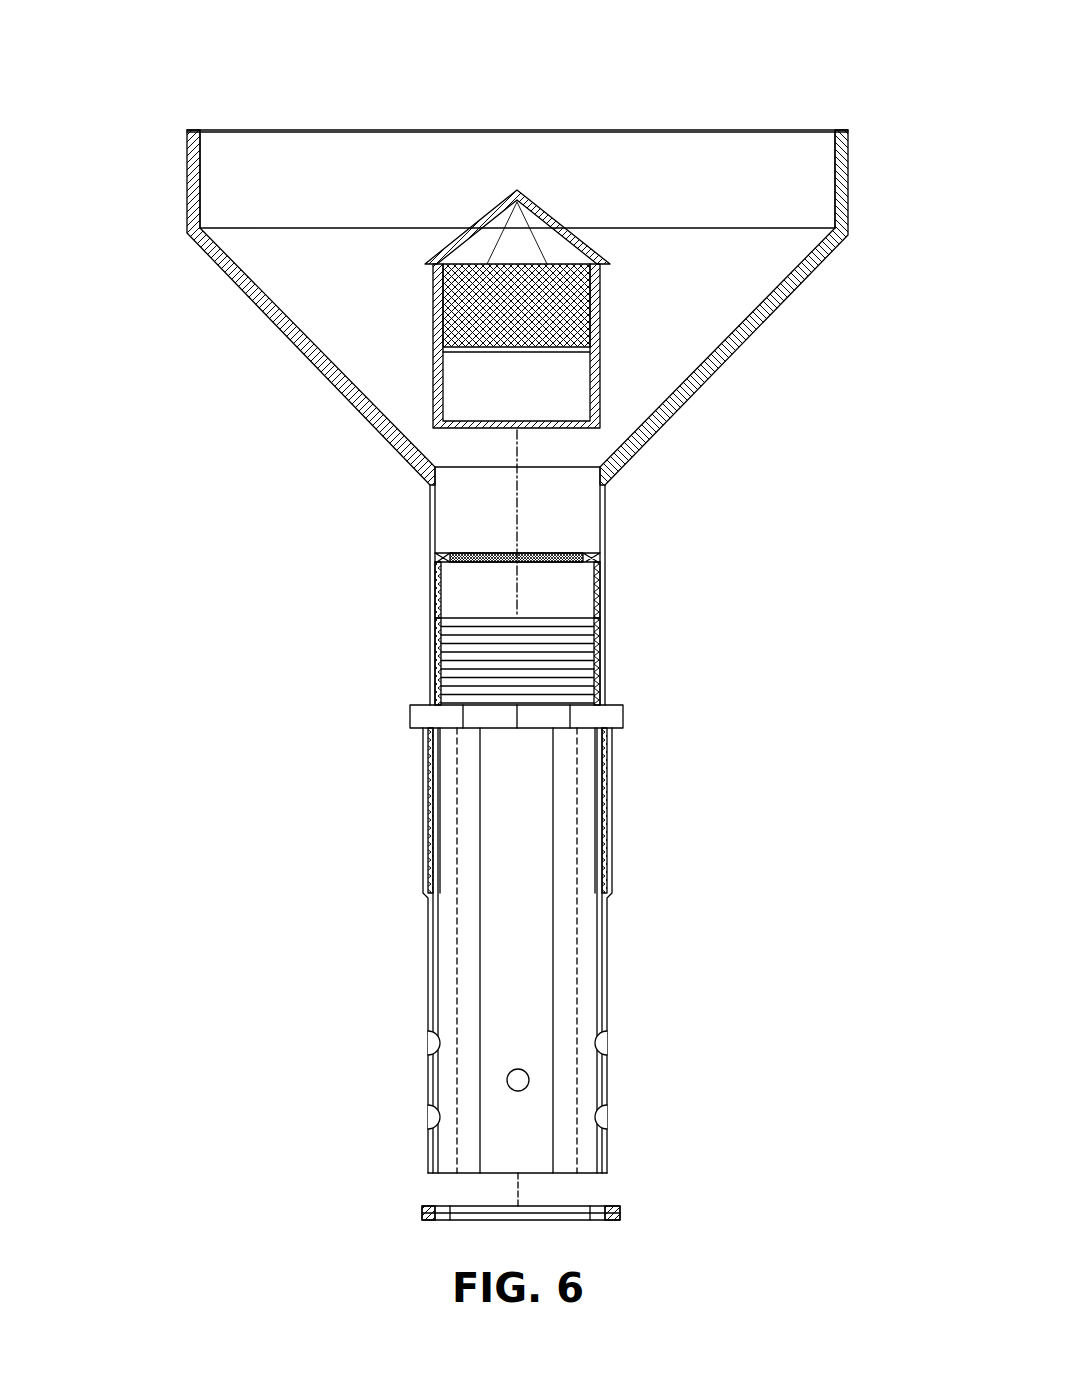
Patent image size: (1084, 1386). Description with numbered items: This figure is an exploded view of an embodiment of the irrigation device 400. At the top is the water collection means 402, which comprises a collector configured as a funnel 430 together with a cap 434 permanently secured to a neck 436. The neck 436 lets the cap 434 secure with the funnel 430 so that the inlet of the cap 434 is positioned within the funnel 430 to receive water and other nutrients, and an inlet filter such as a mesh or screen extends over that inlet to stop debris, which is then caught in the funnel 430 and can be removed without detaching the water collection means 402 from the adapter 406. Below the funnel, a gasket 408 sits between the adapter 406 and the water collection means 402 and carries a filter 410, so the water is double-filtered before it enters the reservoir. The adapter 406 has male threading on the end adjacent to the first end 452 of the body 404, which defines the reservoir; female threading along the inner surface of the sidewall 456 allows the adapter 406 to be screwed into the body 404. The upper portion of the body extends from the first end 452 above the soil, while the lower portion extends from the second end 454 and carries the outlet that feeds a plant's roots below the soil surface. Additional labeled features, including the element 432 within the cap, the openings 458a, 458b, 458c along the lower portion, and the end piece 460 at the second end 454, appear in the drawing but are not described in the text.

The irrigation device 400 is at (127, 86).
The water collection means 402 is at (165, 308).
The dispensing body 404 is at (378, 976).
The adapter 406 is at (428, 715).
The gasket 408 is at (444, 557).
The filter 410 is at (548, 553).
The funnel 430 is at (280, 210).
The filter medium 432 is at (580, 320).
The cap 434 is at (524, 198).
The neck 436 is at (595, 405).
The first end 452 is at (532, 735).
The second end 454 is at (456, 1179).
The sidewall 456 is at (490, 893).
The notch 458a is at (606, 1045).
The aperture 458b is at (520, 1072).
The notch 458c is at (606, 1118).
The base cap 460 is at (577, 1213).